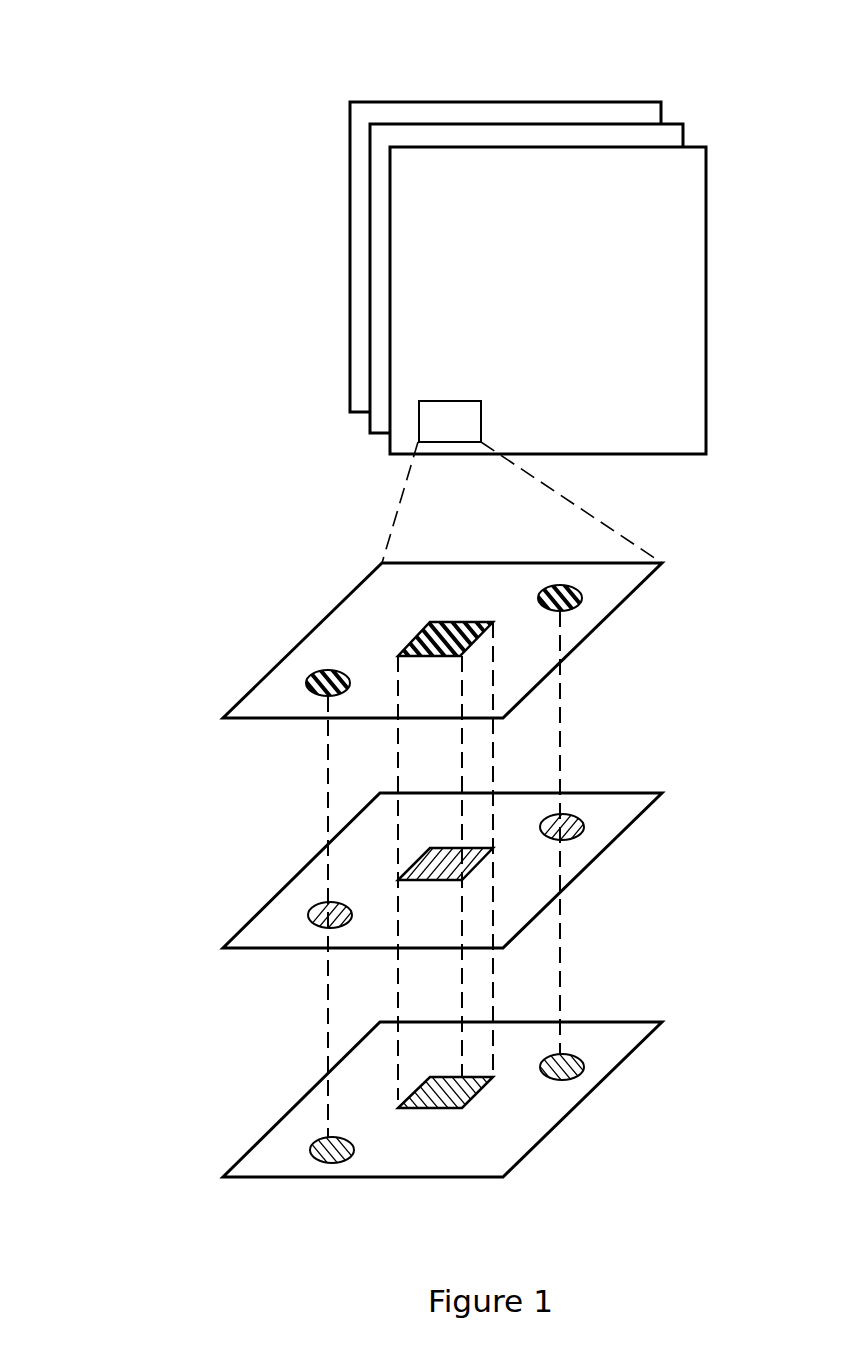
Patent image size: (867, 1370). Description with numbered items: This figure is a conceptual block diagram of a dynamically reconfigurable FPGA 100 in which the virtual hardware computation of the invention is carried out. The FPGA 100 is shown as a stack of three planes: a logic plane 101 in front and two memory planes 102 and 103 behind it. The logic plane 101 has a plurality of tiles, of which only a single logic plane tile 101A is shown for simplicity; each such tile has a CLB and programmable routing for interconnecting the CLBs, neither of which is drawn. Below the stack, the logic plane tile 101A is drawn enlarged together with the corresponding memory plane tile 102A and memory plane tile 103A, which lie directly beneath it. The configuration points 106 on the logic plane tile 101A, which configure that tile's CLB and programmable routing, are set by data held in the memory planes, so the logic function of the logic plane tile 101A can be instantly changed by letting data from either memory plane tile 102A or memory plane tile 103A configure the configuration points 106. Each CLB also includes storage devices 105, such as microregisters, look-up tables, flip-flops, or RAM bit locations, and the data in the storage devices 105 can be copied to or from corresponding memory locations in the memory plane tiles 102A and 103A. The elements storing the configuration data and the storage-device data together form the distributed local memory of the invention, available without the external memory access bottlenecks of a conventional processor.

The dynamically reconfigurable FPGA 100 is at (415, 227).
The logic plane 101 is at (390, 327).
The memory plane 102 is at (370, 230).
The memory plane 103 is at (350, 130).
The logic plane tile 101A is at (315, 628).
The memory plane tile 102A is at (315, 858).
The memory plane tile 103A is at (313, 1090).
The storage devices 105 is at (451, 621).
The configuration points 106 is at (579, 607).